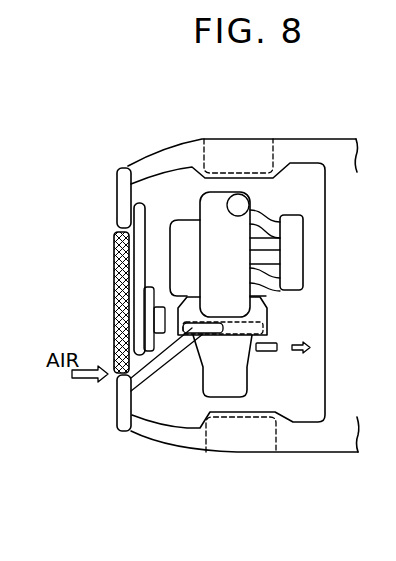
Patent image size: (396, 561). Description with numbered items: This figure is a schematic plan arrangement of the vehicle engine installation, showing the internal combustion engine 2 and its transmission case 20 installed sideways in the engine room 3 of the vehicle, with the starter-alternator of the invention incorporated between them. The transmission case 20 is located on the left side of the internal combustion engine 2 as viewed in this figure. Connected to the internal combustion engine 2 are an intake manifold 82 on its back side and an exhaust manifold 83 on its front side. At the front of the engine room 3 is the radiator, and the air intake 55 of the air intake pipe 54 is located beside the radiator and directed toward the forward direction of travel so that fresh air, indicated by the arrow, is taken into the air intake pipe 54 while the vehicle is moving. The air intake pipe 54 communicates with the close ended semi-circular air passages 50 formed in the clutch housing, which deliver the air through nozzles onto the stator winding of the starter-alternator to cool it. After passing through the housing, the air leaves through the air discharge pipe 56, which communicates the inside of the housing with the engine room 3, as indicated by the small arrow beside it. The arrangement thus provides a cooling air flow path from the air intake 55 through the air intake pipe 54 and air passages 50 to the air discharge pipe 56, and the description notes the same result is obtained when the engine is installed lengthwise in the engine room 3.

The engine room 3 is at (173, 185).
The internal combustion engine 2 is at (232, 269).
The transmission case 20 is at (235, 370).
The air passage 50 is at (268, 318).
The air intake pipe 54 is at (171, 356).
The air intake 55 is at (127, 382).
The air discharge pipe 56 is at (270, 351).
The intake manifold 82 is at (137, 268).
The exhaust manifold 83 is at (178, 253).